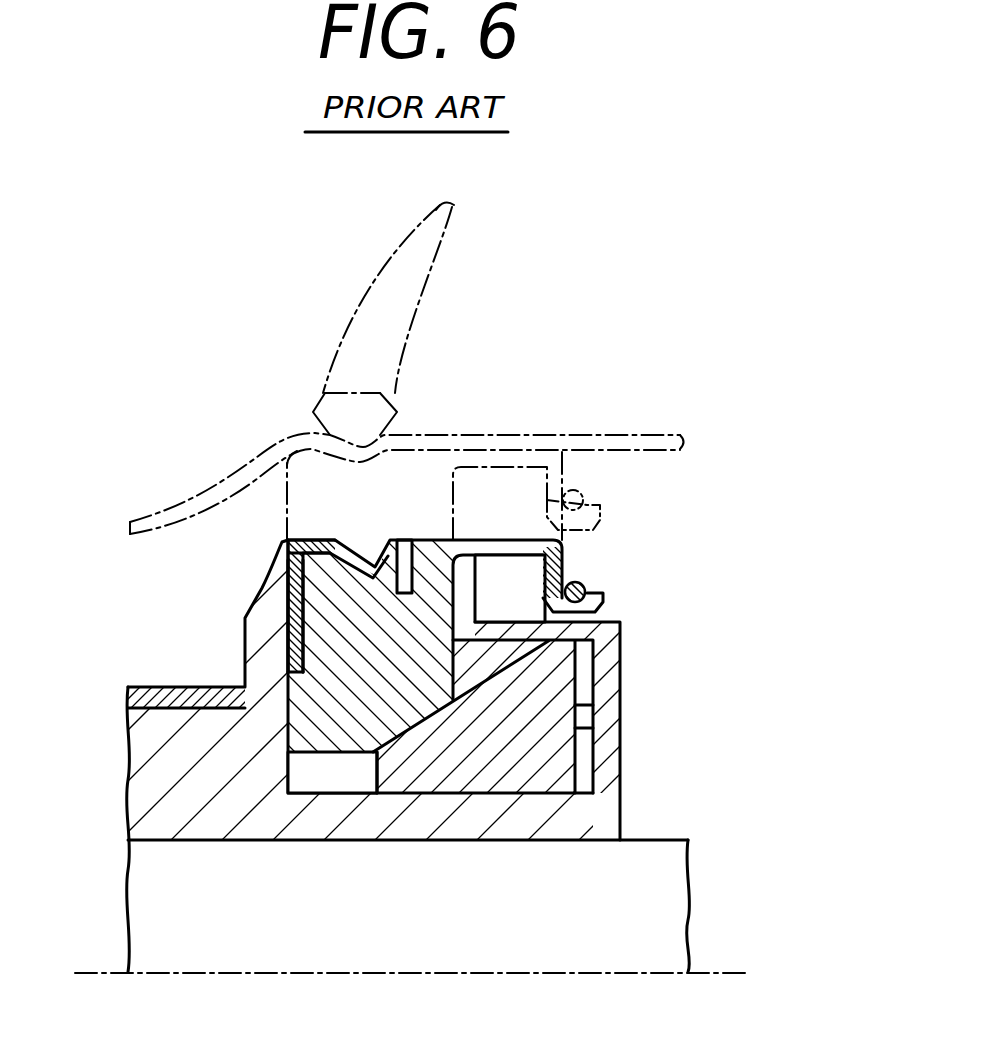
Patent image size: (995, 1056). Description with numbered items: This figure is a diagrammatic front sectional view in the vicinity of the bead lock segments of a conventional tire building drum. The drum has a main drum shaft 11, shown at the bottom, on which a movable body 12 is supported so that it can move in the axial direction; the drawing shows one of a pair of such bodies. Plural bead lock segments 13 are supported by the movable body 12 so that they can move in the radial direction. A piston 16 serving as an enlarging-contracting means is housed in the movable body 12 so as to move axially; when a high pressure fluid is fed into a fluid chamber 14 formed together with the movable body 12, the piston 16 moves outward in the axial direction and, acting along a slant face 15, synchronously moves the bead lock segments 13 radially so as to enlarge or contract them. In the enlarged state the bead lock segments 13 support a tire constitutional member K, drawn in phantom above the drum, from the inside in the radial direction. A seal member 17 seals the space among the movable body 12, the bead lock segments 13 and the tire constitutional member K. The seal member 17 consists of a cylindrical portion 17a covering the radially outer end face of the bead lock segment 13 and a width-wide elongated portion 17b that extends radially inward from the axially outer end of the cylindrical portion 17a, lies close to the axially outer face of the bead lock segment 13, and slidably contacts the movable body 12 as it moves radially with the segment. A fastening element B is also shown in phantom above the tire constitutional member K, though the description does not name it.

The main drum shaft 11 is at (612, 893).
The movable body 12 is at (187, 798).
The bead lock segment 13 is at (337, 692).
The fluid chamber 14 is at (585, 682).
The slant face 15 is at (505, 660).
The piston 16 is at (527, 750).
The seal member 17 is at (347, 536).
The cylindrical portion 17a is at (307, 540).
The elongated portion 17b is at (293, 588).
The bolt B is at (397, 288).
The tire constitutional member K is at (587, 438).